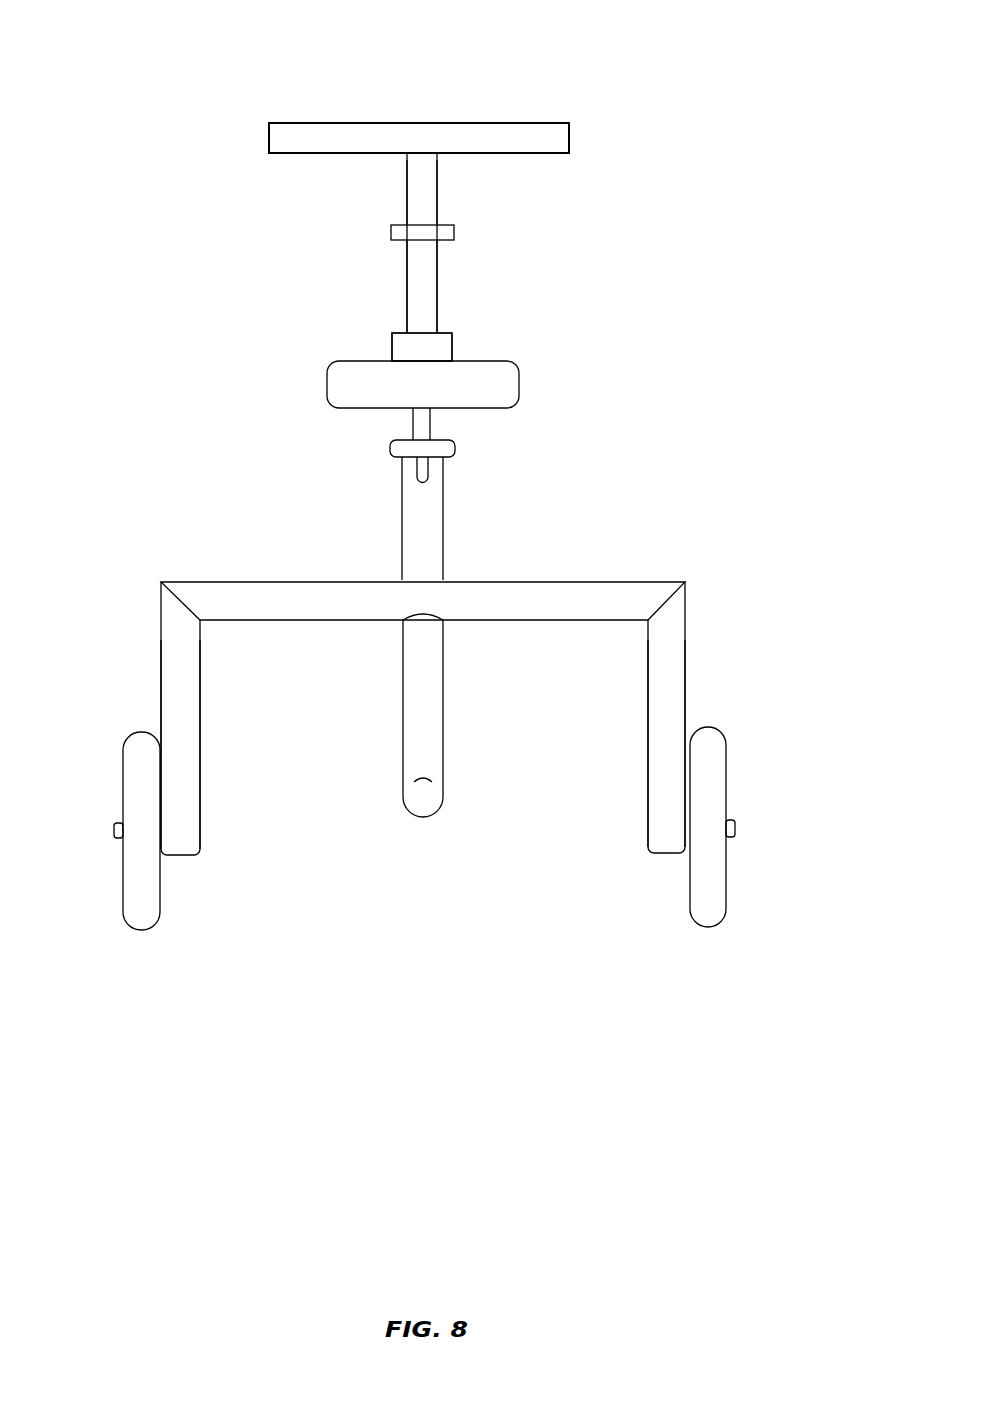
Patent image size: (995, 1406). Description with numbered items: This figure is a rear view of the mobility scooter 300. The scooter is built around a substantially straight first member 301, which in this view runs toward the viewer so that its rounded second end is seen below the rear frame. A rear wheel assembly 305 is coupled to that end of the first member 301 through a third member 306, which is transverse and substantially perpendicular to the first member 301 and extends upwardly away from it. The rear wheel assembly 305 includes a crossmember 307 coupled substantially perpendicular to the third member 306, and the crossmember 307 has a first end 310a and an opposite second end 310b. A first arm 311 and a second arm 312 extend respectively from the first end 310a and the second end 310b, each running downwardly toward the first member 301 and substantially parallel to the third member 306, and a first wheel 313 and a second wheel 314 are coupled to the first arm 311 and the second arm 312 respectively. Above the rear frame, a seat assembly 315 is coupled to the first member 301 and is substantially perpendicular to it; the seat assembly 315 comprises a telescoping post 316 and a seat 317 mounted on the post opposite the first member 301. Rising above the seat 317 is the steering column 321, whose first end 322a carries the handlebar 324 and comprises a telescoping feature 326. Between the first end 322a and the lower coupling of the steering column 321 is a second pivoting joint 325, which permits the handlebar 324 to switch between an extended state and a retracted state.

The mobility scooter 300 is at (757, 180).
The first member 301 is at (426, 842).
The rear wheel assembly 305 is at (571, 535).
The third member 306 is at (436, 677).
The crossmember 307 is at (304, 564).
The first end of the crossmember 310a is at (197, 598).
The second end of the crossmember 310b is at (663, 588).
The first arm 311 is at (170, 712).
The second arm 312 is at (683, 710).
The first wheel 313 is at (128, 895).
The second wheel 314 is at (724, 893).
The seat assembly 315 is at (347, 342).
The telescoping post 316 is at (410, 570).
The seat 317 is at (483, 372).
The steering column 321 is at (378, 186).
The first end of the steering column 322a is at (423, 195).
The handlebar 324 is at (563, 145).
The second pivoting joint 325 is at (425, 348).
The telescoping feature 326 is at (423, 218).